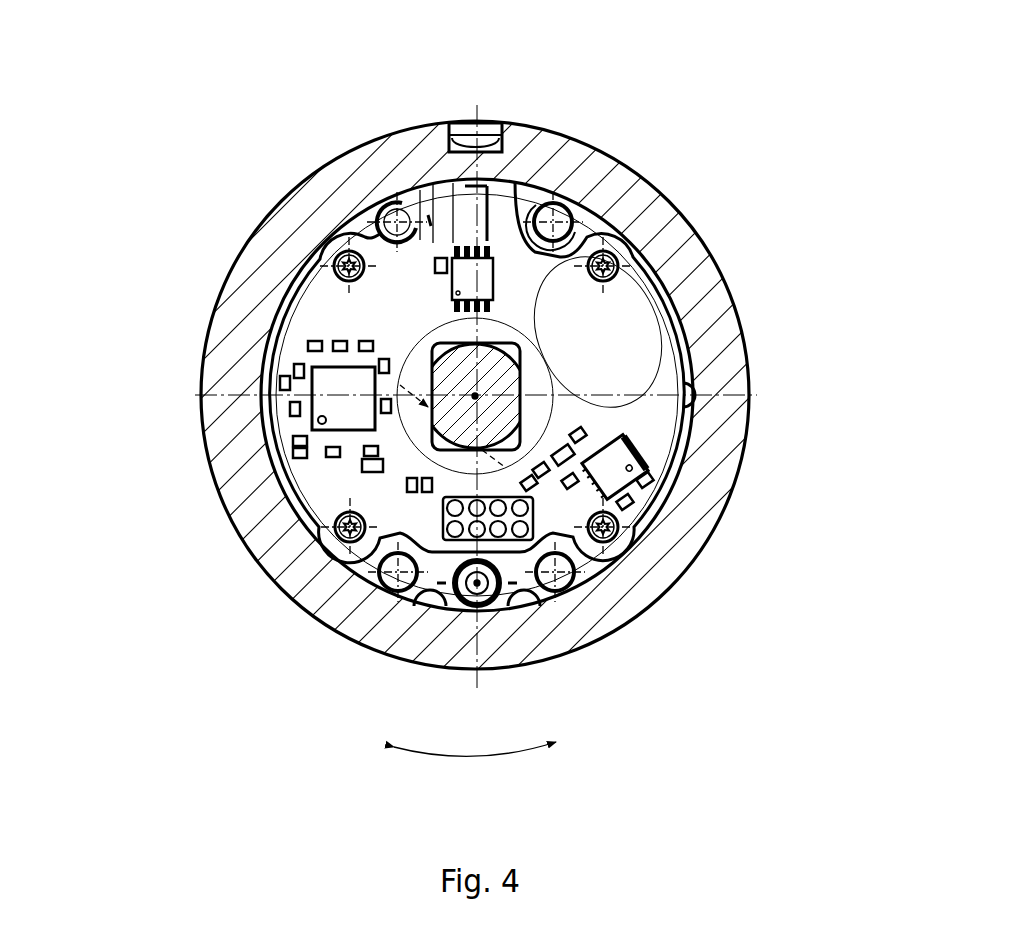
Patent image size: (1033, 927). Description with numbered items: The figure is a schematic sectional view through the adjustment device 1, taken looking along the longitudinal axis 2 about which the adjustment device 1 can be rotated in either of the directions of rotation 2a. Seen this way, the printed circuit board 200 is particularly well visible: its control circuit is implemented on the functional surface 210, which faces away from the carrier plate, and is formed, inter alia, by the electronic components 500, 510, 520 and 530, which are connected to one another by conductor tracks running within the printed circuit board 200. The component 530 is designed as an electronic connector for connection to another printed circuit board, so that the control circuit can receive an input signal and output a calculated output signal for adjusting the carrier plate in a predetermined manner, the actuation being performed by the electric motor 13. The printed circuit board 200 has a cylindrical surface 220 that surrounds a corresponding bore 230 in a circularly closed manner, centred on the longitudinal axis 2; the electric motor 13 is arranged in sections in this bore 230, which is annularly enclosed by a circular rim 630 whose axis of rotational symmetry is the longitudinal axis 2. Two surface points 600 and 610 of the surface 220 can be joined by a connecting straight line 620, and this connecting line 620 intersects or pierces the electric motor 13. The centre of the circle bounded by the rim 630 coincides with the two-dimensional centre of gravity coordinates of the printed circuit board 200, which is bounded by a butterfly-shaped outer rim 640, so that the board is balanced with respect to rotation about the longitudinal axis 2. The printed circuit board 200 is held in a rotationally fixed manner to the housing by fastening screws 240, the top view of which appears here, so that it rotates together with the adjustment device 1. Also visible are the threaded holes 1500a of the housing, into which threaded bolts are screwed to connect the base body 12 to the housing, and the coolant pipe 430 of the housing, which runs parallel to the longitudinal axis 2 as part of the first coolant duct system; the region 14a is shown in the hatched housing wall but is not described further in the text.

The adjustment device 1 is at (820, 560).
The longitudinal axis 2 is at (516, 336).
The directions of rotation 2a is at (392, 760).
The base body 12 is at (700, 291).
The electric motor 13 is at (648, 244).
The housing wall section 14a is at (286, 262).
The printed circuit board 200 is at (296, 528).
The functional surface 210 is at (610, 339).
The cylindrical surface 220 is at (400, 202).
The bore 230 is at (672, 275).
The fastening screws 240 is at (616, 255).
The coolant pipe 430 is at (495, 608).
The electronic component 500 is at (328, 384).
The electronic component 510 is at (646, 452).
The electronic component 520 is at (560, 222).
The electronic connector 530 is at (532, 540).
The surface point 600 is at (298, 526).
The surface point 610 is at (372, 562).
The connecting straight line 620 is at (400, 388).
The circular rim 630 is at (645, 232).
The butterfly-shaped outer rim 640 is at (420, 200).
The threaded holes 1500a is at (398, 216).